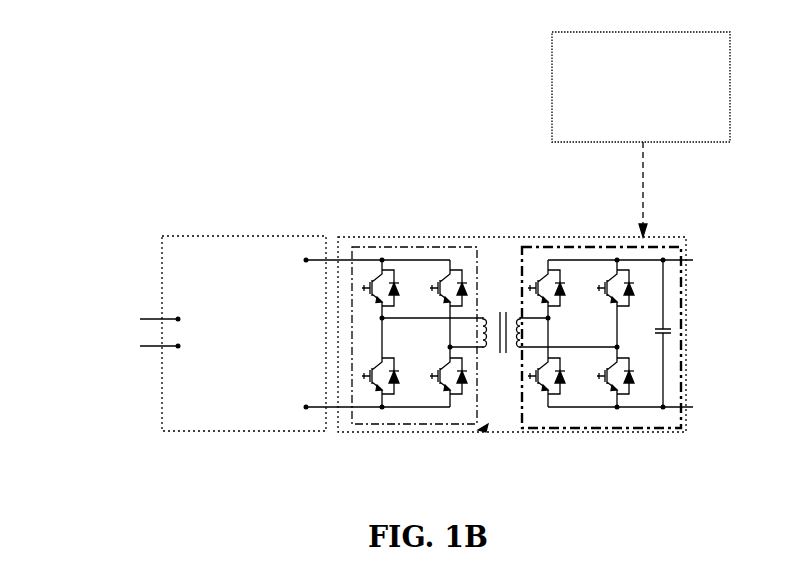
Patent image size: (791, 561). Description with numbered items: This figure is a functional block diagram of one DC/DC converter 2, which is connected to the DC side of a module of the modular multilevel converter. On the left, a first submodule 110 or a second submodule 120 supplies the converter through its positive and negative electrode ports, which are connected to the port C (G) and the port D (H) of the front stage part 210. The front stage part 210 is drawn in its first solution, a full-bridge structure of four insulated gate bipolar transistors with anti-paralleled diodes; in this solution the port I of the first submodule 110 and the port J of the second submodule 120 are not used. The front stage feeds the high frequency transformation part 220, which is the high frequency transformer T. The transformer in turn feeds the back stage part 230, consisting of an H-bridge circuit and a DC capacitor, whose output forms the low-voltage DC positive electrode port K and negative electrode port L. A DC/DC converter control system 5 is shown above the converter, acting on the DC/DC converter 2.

The first submodule 110 is at (169, 362).
The second submodule 120 is at (190, 432).
The DC/DC converter 2 is at (497, 209).
The DC/DC converter control system 5 is at (641, 134).
The front stage part 210 is at (400, 246).
The high frequency transformation part 220 is at (497, 352).
The back stage part 230 is at (676, 247).